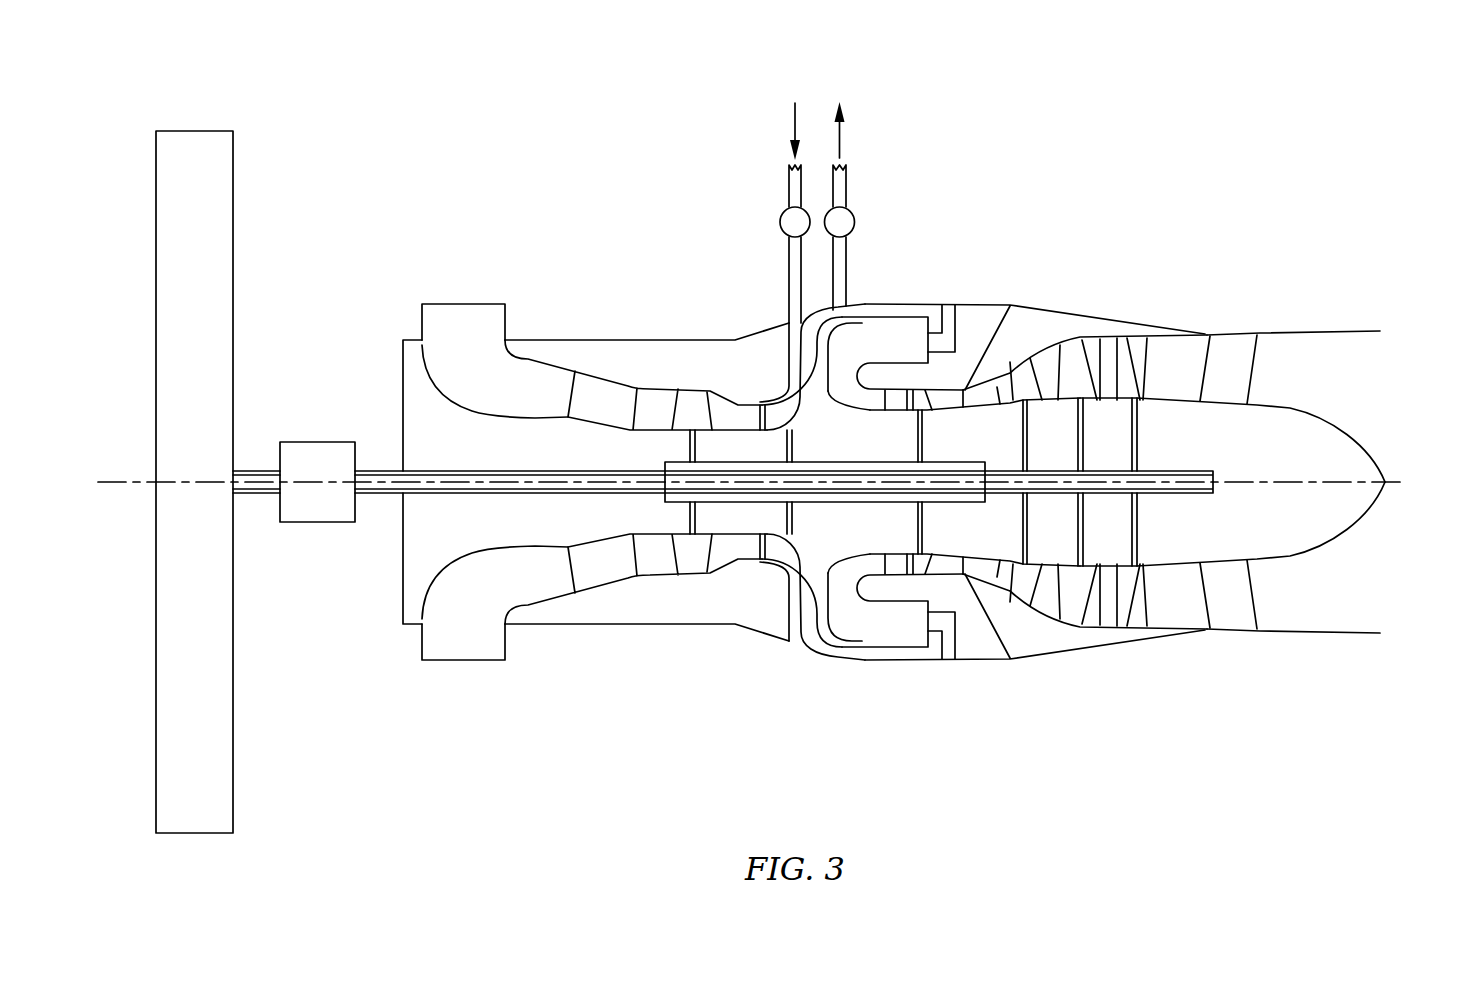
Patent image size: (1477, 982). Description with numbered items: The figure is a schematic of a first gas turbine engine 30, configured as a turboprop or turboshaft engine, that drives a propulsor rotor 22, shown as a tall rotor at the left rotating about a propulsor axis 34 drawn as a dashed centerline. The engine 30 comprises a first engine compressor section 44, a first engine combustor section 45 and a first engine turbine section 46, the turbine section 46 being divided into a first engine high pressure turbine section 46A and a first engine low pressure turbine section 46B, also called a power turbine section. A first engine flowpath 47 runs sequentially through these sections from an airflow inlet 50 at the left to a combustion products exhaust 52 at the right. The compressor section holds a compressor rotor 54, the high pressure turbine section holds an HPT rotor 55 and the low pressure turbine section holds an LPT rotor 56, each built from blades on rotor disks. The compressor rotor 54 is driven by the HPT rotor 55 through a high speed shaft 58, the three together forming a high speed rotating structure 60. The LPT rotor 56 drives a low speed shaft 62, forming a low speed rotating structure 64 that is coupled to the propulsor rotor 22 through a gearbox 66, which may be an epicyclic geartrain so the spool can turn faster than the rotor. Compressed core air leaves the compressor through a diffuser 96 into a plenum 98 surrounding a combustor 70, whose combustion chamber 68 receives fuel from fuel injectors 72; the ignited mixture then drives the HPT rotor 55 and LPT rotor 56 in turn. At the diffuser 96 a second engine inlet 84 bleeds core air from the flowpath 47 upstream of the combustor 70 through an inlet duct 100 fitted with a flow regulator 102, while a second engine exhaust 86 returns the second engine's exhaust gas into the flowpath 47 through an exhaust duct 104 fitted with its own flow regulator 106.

The propulsor rotor 22 is at (235, 115).
The first gas turbine engine 30 is at (1280, 110).
The propulsor axis 34 is at (107, 485).
The first engine compressor section 44 is at (750, 602).
The first engine combustor section 45 is at (883, 675).
The first engine turbine section 46 is at (1022, 632).
The first engine high pressure turbine section 46A is at (950, 378).
The first engine low pressure turbine section 46B is at (1086, 325).
The first engine flowpath 47 is at (520, 402).
The airflow inlet 50 is at (466, 303).
The combustion products exhaust 52 is at (1370, 373).
The compressor rotor 54 is at (765, 428).
The HPT rotor 55 is at (920, 446).
The LPT rotor 56 is at (1133, 413).
The high speed shaft 58 is at (817, 448).
The high speed rotating structure 60 is at (825, 512).
The low speed shaft 62 is at (1175, 498).
The low speed rotating structure 64 is at (575, 458).
The gearbox 66 is at (305, 496).
The combustion chamber 68 is at (885, 355).
The combustor 70 is at (907, 316).
The fuel injector 72 is at (965, 322).
The second engine inlet 84 is at (852, 300).
The second engine exhaust 86 is at (787, 318).
The diffuser 96 is at (820, 655).
The plenum 98 is at (910, 665).
The inlet duct 100 is at (856, 246).
The flow regulator 102 is at (850, 212).
The exhaust duct 104 is at (789, 262).
The flow regulator 106 is at (781, 222).